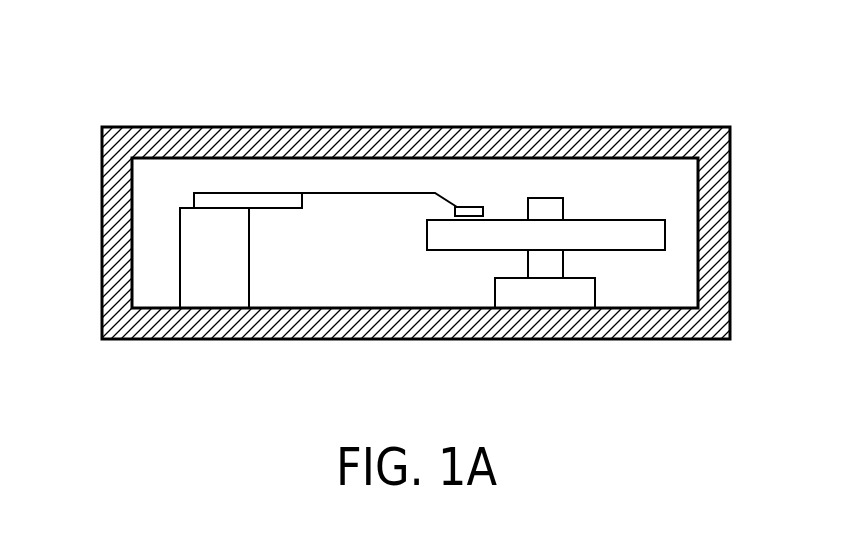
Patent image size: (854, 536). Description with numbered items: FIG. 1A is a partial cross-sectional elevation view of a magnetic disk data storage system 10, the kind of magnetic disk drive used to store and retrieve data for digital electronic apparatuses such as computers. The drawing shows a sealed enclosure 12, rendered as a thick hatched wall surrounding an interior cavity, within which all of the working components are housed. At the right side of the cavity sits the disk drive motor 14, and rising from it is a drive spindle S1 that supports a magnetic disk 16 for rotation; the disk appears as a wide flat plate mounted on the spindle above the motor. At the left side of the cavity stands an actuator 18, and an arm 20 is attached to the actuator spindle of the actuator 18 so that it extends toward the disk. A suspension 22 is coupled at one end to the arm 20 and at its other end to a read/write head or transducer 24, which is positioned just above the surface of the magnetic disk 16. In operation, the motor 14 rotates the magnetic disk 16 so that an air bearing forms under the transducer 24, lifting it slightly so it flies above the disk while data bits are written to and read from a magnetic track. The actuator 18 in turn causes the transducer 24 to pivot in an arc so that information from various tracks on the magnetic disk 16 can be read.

The magnetic disk data storage system 10 is at (610, 69).
The sealed enclosure 12 is at (463, 328).
The disk drive motor 14 is at (552, 293).
The drive spindle S1 is at (543, 207).
The magnetic disk 16 is at (613, 232).
The actuator 18 is at (232, 253).
The arm 20 is at (272, 200).
The suspension 22 is at (362, 196).
The transducer 24 is at (478, 205).